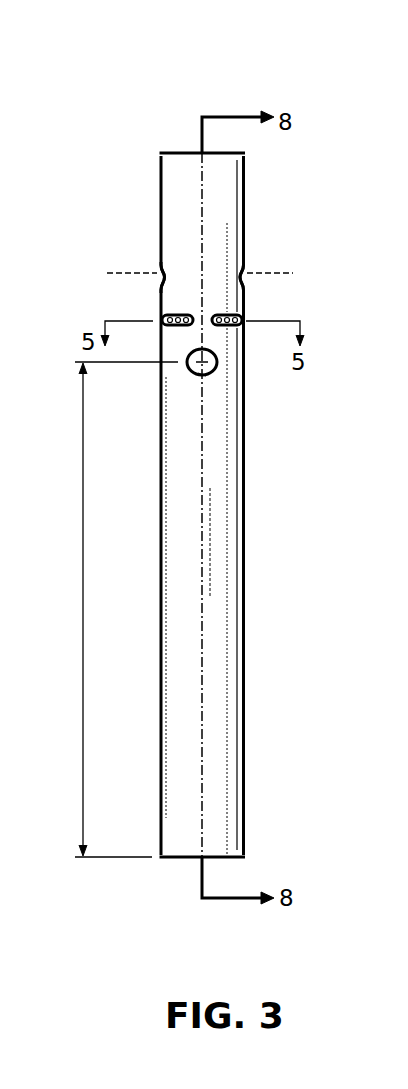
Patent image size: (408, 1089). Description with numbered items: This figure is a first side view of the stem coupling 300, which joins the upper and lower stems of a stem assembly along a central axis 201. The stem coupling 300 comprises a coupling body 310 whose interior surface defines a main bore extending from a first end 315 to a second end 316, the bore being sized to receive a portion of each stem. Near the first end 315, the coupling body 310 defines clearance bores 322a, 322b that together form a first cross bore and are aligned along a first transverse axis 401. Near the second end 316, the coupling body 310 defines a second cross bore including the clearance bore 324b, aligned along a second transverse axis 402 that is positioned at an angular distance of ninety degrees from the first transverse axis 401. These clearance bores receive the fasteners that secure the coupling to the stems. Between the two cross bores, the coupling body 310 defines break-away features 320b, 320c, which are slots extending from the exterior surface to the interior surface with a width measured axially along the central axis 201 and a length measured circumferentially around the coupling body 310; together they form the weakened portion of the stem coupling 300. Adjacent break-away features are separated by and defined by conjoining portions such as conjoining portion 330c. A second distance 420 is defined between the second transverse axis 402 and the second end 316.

The stem coupling 300 is at (160, 58).
The first end 315 is at (180, 153).
The second end 316 is at (178, 858).
The coupling body 310 is at (228, 203).
The clearance bore 322b is at (160, 266).
The clearance bore 322a is at (244, 266).
The break-away feature 320c is at (190, 317).
The break-away feature 320b is at (214, 317).
The first transverse axis 401 is at (275, 275).
The conjoining portion 330c is at (204, 324).
The second transverse axis 402 is at (192, 372).
The clearance bore 324b is at (206, 376).
The second distance 420 is at (82, 597).
The central axis 201 is at (203, 636).